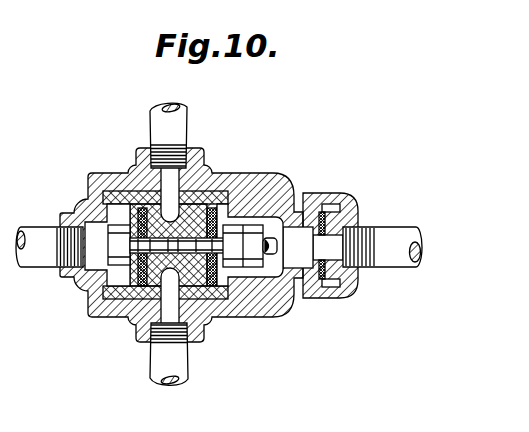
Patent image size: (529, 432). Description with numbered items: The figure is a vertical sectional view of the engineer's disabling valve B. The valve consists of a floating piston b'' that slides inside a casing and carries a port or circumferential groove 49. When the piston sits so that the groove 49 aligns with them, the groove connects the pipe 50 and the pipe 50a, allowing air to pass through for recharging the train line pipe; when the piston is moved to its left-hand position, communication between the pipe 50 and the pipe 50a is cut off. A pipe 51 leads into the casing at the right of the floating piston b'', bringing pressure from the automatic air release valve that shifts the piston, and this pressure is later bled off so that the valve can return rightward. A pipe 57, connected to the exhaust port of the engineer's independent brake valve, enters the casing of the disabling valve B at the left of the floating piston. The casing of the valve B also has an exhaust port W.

The engineer's disabling valve B is at (238, 172).
The exhaust port W is at (137, 311).
The port or circumferential groove 49 is at (160, 203).
The pipe 50 is at (176, 126).
The pipe 50a is at (176, 363).
The pipe 51 is at (387, 239).
The pipe 57 is at (29, 238).
The floating piston b'' is at (206, 310).